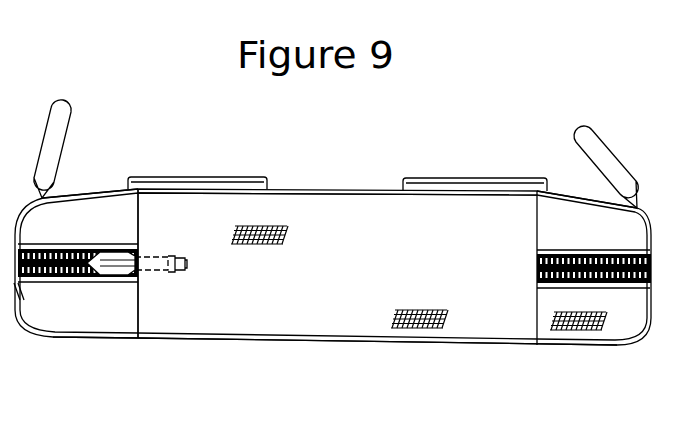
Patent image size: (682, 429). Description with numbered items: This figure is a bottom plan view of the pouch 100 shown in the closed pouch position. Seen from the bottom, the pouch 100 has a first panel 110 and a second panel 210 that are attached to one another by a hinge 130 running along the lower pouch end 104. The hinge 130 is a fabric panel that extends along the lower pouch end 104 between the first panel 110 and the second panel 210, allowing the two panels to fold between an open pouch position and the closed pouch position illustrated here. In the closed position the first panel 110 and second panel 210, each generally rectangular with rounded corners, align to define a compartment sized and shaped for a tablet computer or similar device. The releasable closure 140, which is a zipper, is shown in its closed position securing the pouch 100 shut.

The pouch 100 is at (553, 70).
The lower pouch end 104 is at (133, 217).
The first panel 110 is at (92, 330).
The hinge 130 is at (357, 237).
The releasable closure 140 is at (547, 248).
The second panel 210 is at (116, 217).